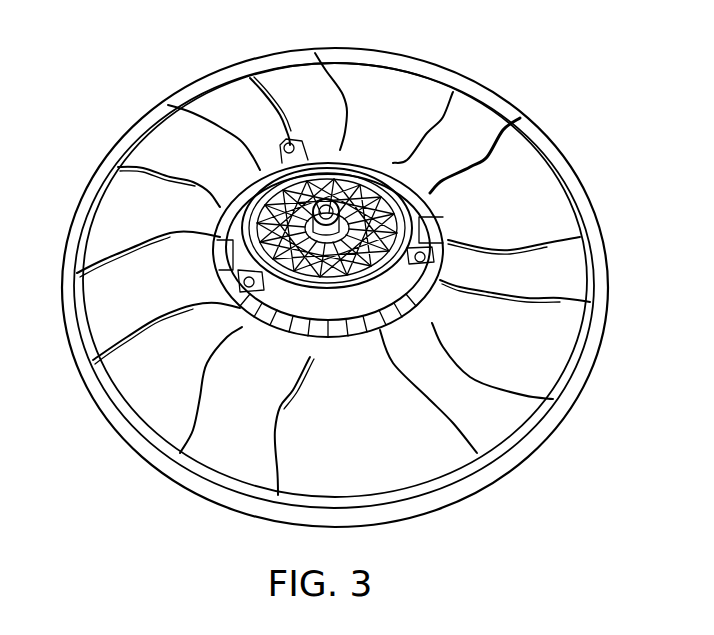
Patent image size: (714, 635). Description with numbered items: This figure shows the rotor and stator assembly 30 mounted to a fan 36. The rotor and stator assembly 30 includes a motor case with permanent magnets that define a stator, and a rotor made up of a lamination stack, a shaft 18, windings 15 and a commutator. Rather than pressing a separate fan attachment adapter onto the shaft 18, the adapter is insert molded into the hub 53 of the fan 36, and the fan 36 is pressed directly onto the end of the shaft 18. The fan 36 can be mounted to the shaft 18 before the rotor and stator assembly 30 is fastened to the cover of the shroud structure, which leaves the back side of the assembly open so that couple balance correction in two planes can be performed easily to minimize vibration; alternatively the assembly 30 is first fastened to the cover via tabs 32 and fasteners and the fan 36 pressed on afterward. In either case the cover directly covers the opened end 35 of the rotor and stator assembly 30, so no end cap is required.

The windings 15 is at (340, 175).
The shaft 18 is at (328, 167).
The rotor and stator assembly 30 is at (340, 303).
The tabs 32 is at (207, 307).
The opened end 35 is at (237, 183).
The fan 36 is at (578, 195).
The hub 53 is at (432, 297).